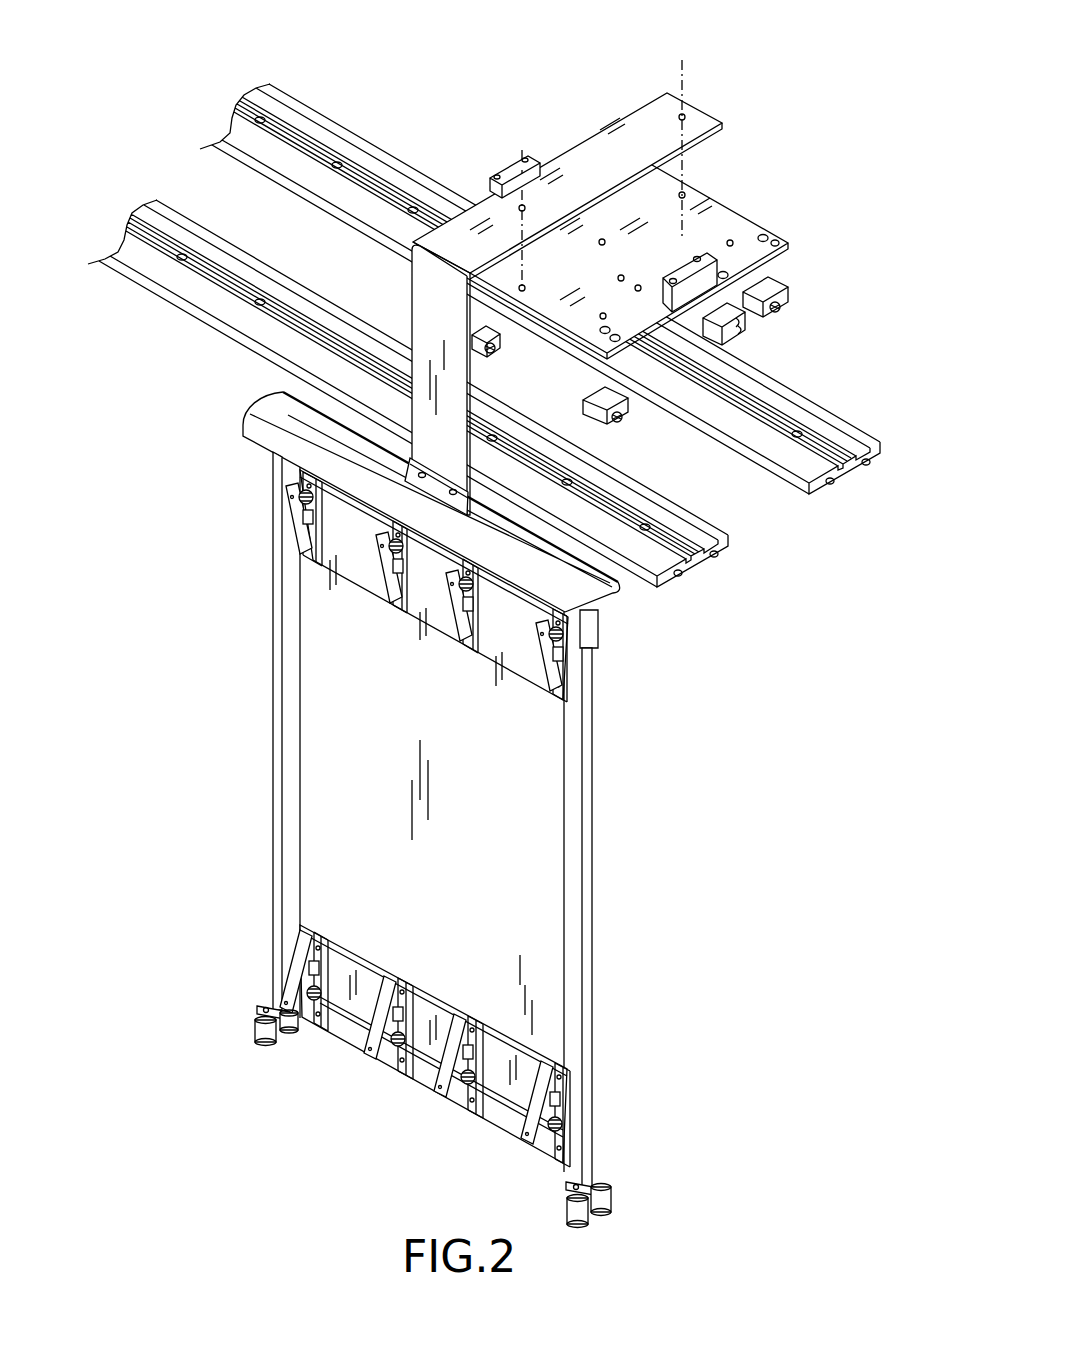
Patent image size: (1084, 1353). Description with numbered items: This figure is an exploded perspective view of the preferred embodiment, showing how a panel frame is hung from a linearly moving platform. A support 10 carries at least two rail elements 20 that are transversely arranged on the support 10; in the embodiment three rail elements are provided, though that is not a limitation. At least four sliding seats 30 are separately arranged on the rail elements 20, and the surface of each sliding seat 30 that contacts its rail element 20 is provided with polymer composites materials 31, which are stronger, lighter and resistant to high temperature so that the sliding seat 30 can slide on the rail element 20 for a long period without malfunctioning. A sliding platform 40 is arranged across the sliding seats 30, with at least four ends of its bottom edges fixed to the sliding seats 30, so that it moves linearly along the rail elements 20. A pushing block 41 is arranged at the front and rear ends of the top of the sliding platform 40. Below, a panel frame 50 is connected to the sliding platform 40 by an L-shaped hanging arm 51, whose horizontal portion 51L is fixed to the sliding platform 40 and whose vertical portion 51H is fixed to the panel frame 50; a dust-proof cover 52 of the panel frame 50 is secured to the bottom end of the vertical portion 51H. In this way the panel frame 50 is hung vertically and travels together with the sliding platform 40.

The support 10 is at (501, 340).
The rail element 20 is at (843, 430).
The sliding seat 30 is at (669, 363).
The polymer composites materials 31 is at (781, 308).
The sliding platform 40 is at (623, 246).
The pushing block 41 is at (776, 242).
The panel frame 50 is at (388, 796).
The hanging arm 51 is at (559, 260).
The vertical portion 51H is at (424, 300).
The horizontal portion 51L is at (577, 170).
The dust-proof cover 52 is at (267, 423).